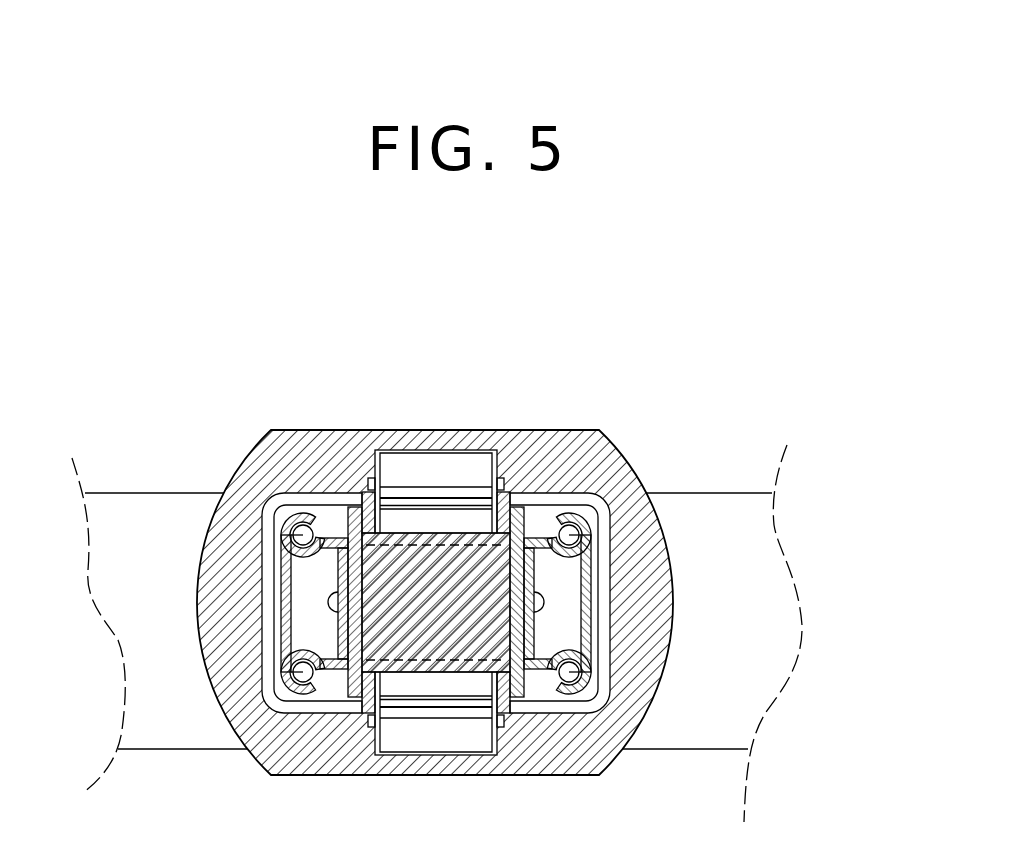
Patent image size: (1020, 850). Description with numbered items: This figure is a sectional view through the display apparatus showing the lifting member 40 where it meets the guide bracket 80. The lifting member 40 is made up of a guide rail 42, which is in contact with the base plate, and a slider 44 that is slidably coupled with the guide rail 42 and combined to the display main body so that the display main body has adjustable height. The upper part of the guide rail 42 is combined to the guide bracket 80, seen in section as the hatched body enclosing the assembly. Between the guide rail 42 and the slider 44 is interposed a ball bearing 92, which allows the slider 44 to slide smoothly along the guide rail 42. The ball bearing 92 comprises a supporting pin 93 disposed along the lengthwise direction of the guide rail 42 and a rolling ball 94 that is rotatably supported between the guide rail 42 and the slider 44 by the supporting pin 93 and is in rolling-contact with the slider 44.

The lifting member 40 is at (850, 543).
The guide rail 42 is at (592, 605).
The slider 44 is at (576, 636).
The guide bracket 80 is at (243, 467).
The ball bearing 92 is at (672, 390).
The supporting pin 93 is at (598, 563).
The rolling ball 94 is at (562, 503).